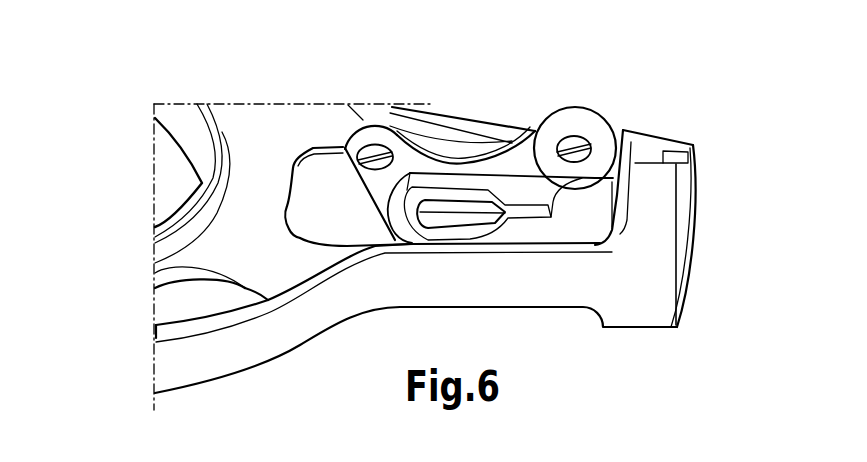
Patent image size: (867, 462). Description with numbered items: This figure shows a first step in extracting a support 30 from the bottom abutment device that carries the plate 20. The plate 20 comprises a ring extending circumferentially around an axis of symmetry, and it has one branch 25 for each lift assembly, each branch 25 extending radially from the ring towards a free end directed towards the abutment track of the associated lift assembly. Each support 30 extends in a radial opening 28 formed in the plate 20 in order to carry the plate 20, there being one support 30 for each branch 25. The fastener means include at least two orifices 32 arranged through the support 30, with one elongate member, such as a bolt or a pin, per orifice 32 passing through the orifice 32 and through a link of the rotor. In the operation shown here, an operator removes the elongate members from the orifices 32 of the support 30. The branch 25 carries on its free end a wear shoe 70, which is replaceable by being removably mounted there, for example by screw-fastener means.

The plate 20 is at (147, 312).
The branch 25 is at (506, 110).
The radial opening 28 is at (313, 216).
The support 30 is at (600, 131).
The orifice 32 is at (375, 148).
The wear shoe 70 is at (686, 210).